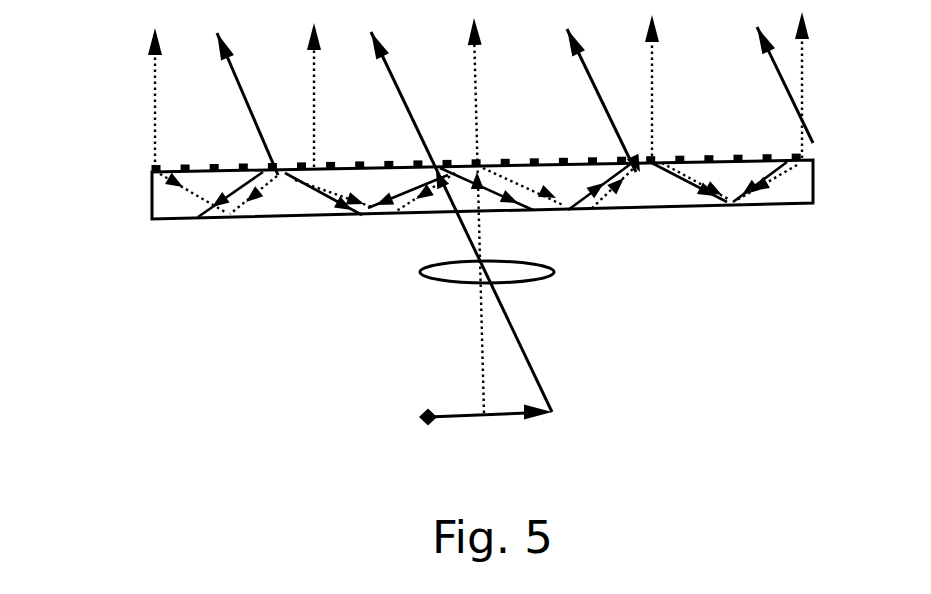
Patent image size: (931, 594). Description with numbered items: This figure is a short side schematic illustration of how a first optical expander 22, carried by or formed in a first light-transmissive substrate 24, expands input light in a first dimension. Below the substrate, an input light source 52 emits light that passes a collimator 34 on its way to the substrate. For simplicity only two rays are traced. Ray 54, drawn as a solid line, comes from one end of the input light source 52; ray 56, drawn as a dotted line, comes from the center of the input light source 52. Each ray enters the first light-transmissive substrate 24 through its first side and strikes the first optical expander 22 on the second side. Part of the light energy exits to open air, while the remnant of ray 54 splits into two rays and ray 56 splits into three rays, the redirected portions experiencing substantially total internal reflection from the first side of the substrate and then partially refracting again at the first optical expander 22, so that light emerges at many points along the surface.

The first optical expander 22 is at (153, 162).
The first light-transmissive substrate 24 is at (160, 205).
The collimator 34 is at (427, 283).
The input light source 52 is at (495, 422).
The ray 54 is at (535, 347).
The ray 56 is at (484, 358).